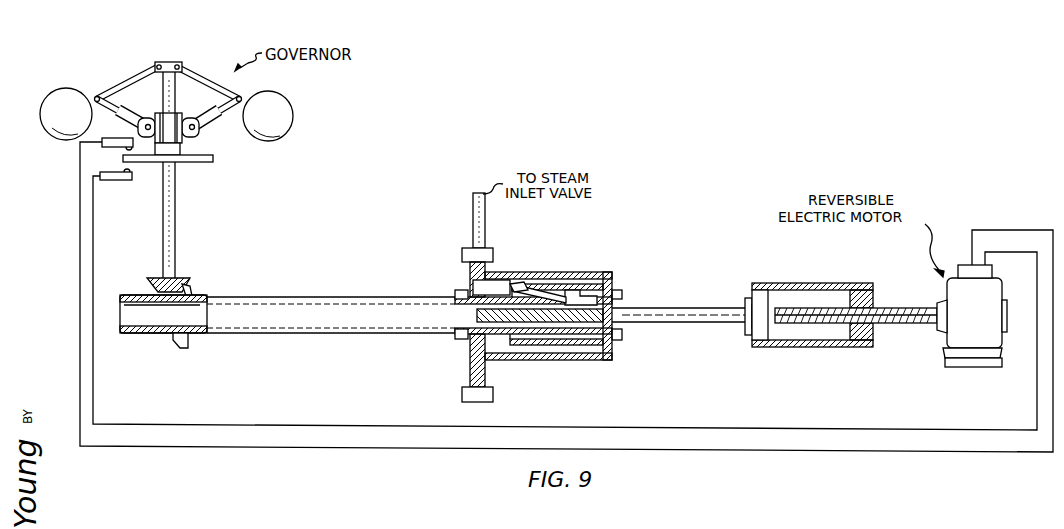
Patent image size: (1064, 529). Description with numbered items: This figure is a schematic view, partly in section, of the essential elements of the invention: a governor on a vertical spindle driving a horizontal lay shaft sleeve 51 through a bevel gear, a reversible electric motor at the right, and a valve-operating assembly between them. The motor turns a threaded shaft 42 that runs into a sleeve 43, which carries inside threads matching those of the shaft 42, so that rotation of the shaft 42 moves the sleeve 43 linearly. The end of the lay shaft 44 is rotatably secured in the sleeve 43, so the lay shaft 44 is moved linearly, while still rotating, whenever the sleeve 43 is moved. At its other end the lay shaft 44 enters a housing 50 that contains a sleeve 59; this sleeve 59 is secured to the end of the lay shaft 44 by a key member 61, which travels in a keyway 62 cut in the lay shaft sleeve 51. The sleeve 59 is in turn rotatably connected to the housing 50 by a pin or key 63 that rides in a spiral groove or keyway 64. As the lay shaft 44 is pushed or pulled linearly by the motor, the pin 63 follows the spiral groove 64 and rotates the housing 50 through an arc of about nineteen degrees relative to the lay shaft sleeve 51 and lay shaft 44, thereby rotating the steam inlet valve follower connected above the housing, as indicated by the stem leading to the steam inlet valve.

The threaded shaft 42 is at (890, 308).
The sleeve 43 is at (800, 283).
The lay shaft 44 is at (708, 309).
The housing 50 is at (597, 359).
The lay shaft sleeve 51 is at (258, 300).
The sleeve 59 is at (547, 299).
The key member 61 is at (567, 290).
The keyway 62 is at (547, 323).
The pin or key 63 is at (530, 287).
The spiral groove or keyway 64 is at (517, 287).